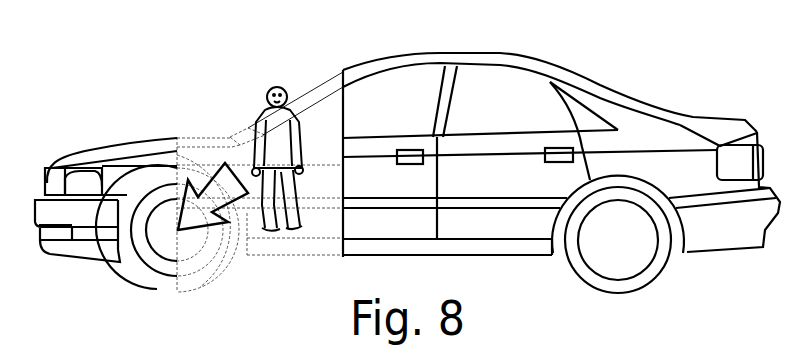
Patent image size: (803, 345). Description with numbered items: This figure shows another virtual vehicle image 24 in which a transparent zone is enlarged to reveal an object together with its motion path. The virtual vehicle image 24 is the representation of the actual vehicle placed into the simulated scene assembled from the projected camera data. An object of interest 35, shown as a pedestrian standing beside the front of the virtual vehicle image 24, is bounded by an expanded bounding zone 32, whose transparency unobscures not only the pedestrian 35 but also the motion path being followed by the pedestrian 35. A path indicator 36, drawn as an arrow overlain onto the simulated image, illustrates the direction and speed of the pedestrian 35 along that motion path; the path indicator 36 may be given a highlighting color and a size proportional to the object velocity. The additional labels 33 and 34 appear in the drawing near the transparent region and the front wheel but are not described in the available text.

The virtual vehicle image 24 is at (645, 90).
The expanded bounding zone 32 is at (333, 72).
The detection region 33 is at (343, 228).
The front wheel 34 is at (178, 258).
The object of interest 35 is at (278, 80).
The path indicator 36 is at (210, 173).